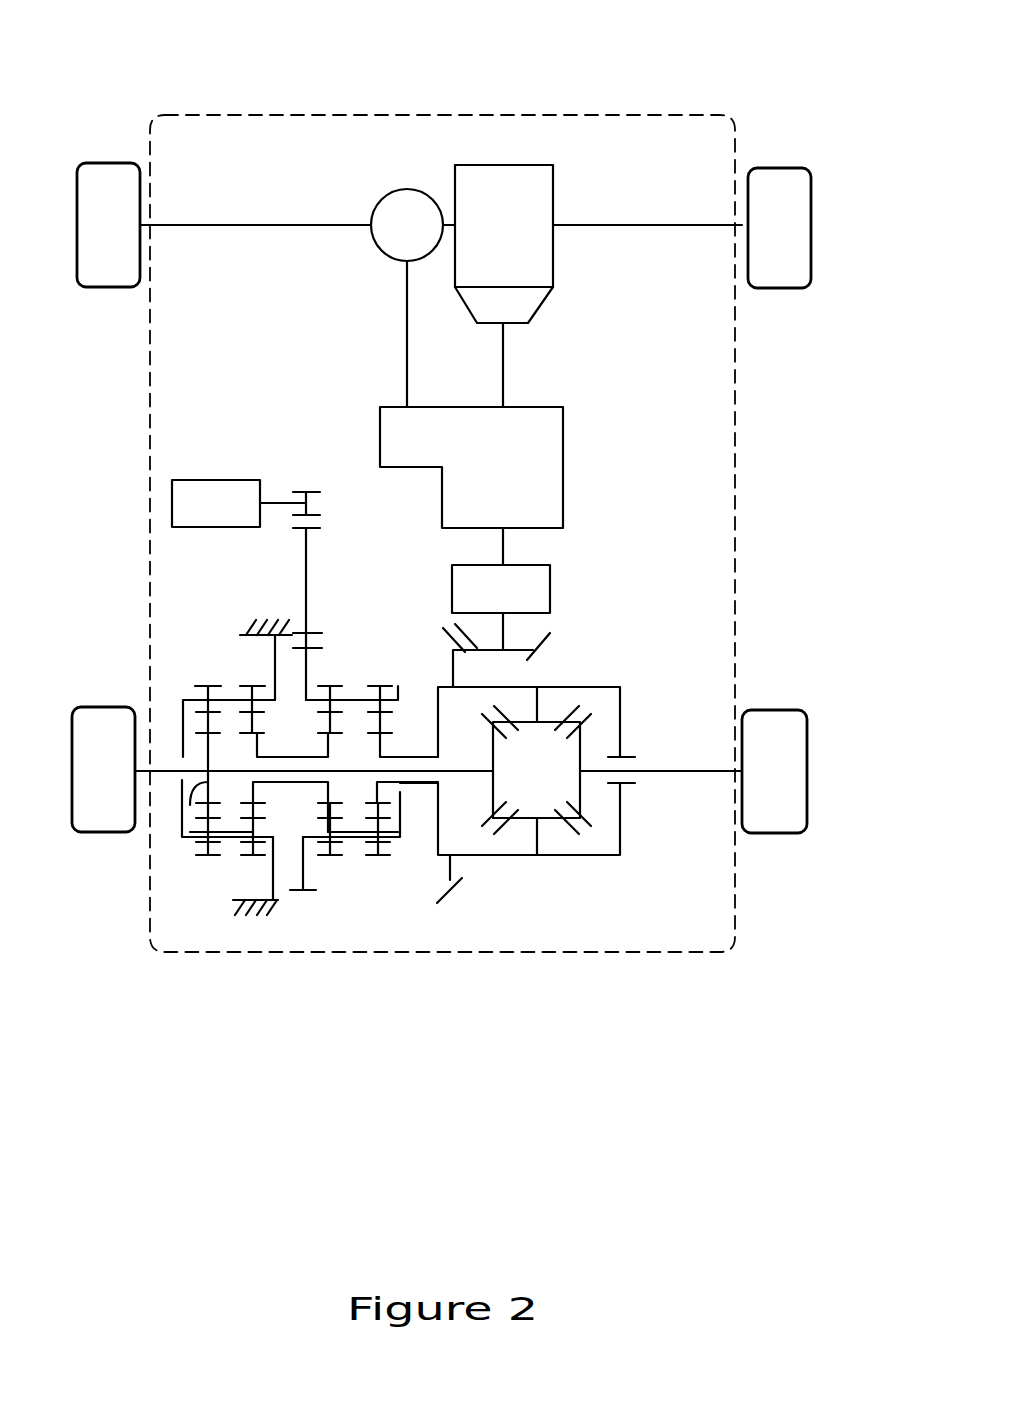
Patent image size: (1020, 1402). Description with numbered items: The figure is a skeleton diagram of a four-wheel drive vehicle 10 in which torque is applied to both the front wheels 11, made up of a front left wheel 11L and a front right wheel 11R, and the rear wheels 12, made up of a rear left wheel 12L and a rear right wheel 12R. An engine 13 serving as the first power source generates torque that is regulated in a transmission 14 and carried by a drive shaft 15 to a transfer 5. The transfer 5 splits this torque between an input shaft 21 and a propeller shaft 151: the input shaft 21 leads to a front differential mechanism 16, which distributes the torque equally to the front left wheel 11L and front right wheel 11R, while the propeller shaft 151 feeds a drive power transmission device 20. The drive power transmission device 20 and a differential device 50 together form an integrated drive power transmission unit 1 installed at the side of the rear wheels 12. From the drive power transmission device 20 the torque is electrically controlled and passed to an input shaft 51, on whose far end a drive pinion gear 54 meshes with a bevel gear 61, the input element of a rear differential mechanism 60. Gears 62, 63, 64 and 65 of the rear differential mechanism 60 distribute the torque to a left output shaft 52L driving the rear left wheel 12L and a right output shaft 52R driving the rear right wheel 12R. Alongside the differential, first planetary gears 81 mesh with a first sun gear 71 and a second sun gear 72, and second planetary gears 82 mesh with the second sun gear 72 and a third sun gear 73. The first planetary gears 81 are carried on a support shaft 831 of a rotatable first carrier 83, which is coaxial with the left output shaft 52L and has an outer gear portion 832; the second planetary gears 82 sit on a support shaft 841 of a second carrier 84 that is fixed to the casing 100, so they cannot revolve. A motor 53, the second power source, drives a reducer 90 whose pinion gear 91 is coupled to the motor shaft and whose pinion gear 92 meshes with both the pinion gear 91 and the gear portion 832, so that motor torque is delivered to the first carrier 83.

The drive power transmission unit 1 is at (712, 606).
The transfer 5 is at (563, 428).
The vehicle 10 is at (616, 85).
The front wheels 11 is at (318, 172).
The front left wheel 11L is at (105, 163).
The front right wheel 11R is at (780, 168).
The rear wheels 12 is at (426, 815).
The rear left wheel 12L is at (83, 707).
The rear right wheel 12R is at (776, 710).
The engine 13 is at (505, 165).
The transmission 14 is at (537, 310).
The drive shaft 15 is at (505, 355).
The front differential mechanism 16 is at (407, 190).
The drive power transmission device 20 is at (550, 570).
The input shaft 21 is at (407, 326).
The differential device 50 is at (544, 632).
The input shaft 51 is at (500, 628).
The left output shaft 52L is at (397, 771).
The right output shaft 52R is at (673, 771).
The motor 53 is at (215, 480).
The drive pinion gear 54 is at (548, 657).
The rear differential mechanism 60 is at (564, 832).
The bevel gear 61 is at (452, 872).
The gear 62 is at (550, 720).
The gear 63 is at (548, 822).
The gear 64 is at (582, 793).
The gear 65 is at (473, 790).
The first sun gear 71 is at (380, 743).
The second sun gear 72 is at (285, 783).
The third sun gear 73 is at (190, 837).
The first planetary gears 81 is at (328, 660).
The second planetary gears 82 is at (240, 695).
The first carrier 83 is at (305, 668).
The second carrier 84 is at (265, 672).
The reducer 90 is at (264, 714).
The pinion gear 91 is at (310, 492).
The pinion gear 92 is at (320, 550).
The casing 100 is at (230, 918).
The propeller shaft 151 is at (505, 547).
The support shaft 831 is at (365, 686).
The gear portion 832 is at (353, 837).
The support shaft 841 is at (197, 707).